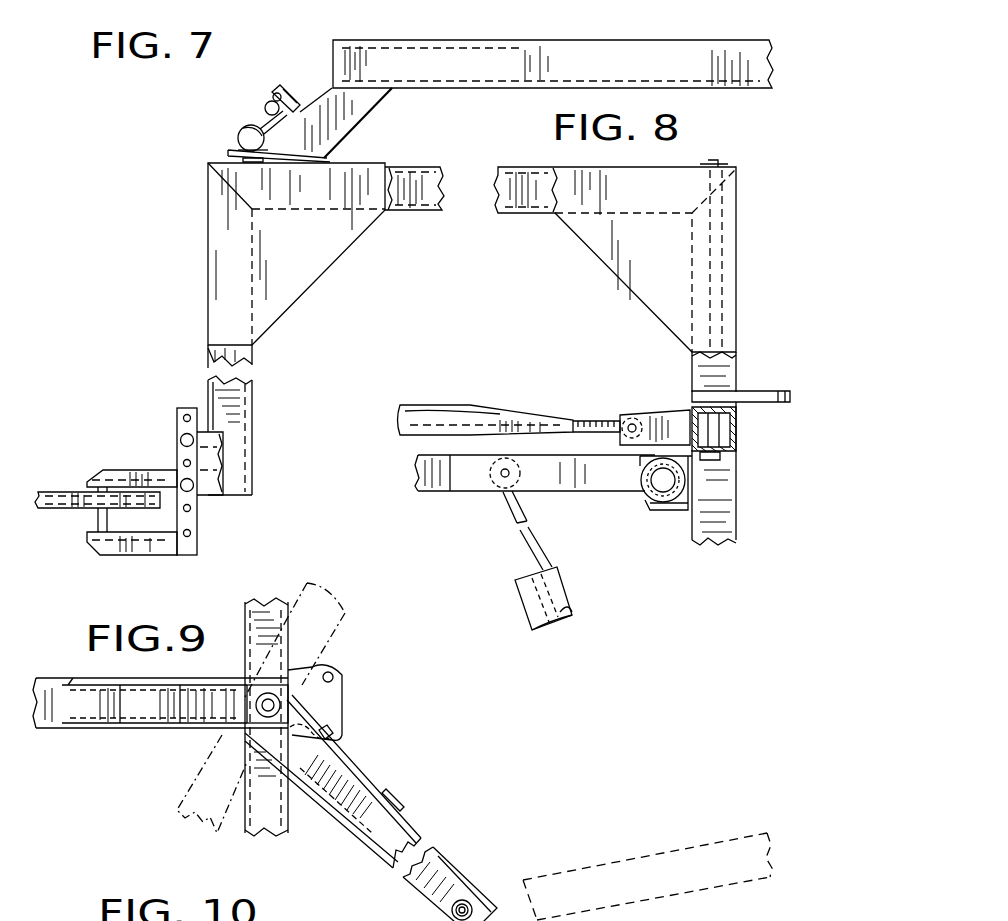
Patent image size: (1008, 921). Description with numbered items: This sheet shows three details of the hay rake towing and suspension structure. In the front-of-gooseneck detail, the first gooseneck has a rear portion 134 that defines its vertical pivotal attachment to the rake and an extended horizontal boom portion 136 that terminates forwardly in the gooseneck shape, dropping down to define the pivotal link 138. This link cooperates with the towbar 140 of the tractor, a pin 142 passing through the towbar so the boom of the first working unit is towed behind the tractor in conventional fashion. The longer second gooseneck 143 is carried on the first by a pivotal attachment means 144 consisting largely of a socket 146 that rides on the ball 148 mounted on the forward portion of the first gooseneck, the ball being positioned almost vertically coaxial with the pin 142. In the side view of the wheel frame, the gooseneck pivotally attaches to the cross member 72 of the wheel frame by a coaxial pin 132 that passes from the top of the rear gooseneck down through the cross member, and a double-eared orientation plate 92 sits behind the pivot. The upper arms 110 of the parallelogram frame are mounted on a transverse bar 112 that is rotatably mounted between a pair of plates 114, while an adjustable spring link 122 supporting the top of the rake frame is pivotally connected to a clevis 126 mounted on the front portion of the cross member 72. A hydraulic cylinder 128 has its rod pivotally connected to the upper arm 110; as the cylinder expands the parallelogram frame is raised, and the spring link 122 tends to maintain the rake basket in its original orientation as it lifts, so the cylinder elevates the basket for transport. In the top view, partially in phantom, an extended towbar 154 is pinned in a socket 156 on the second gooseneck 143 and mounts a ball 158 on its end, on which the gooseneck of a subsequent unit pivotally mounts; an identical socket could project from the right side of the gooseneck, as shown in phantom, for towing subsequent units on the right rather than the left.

In FIG. 8, the cross member 72 is at (733, 433).
In FIG. 9, the cross member 72 is at (290, 632).
In FIG. 8, the orientation plate 92 is at (750, 391).
In FIG. 9, the orientation plate 92 is at (332, 700).
In FIG. 8, the upper arms 110 is at (430, 491).
In FIG. 8, the transverse bar 112 is at (678, 484).
In FIG. 8, the plates 114 is at (678, 508).
In FIG. 8, the adjustable spring link 122 is at (470, 405).
In FIG. 8, the clevis 126 is at (660, 413).
In FIG. 8, the hydraulic cylinder 128 is at (573, 595).
In FIG. 8, the coaxial pin 132 is at (715, 425).
In FIG. 8, the rear portion 134 is at (672, 294).
In FIG. 7, the horizontal boom portion 136 is at (410, 168).
In FIG. 7, the pivotal link 138 is at (145, 468).
In FIG. 7, the towbar 140 is at (62, 495).
In FIG. 7, the pin 142 is at (98, 515).
In FIG. 7, the second gooseneck 143 is at (537, 40).
In FIG. 7, the pivotal attachment means 144 is at (234, 132).
In FIG. 7, the socket 146 is at (249, 126).
In FIG. 7, the ball 148 is at (233, 143).
In FIG. 9, the extended towbar 154 is at (465, 890).
In FIG. 9, the socket 156 is at (386, 791).
In FIG. 9, the ball 158 is at (465, 900).